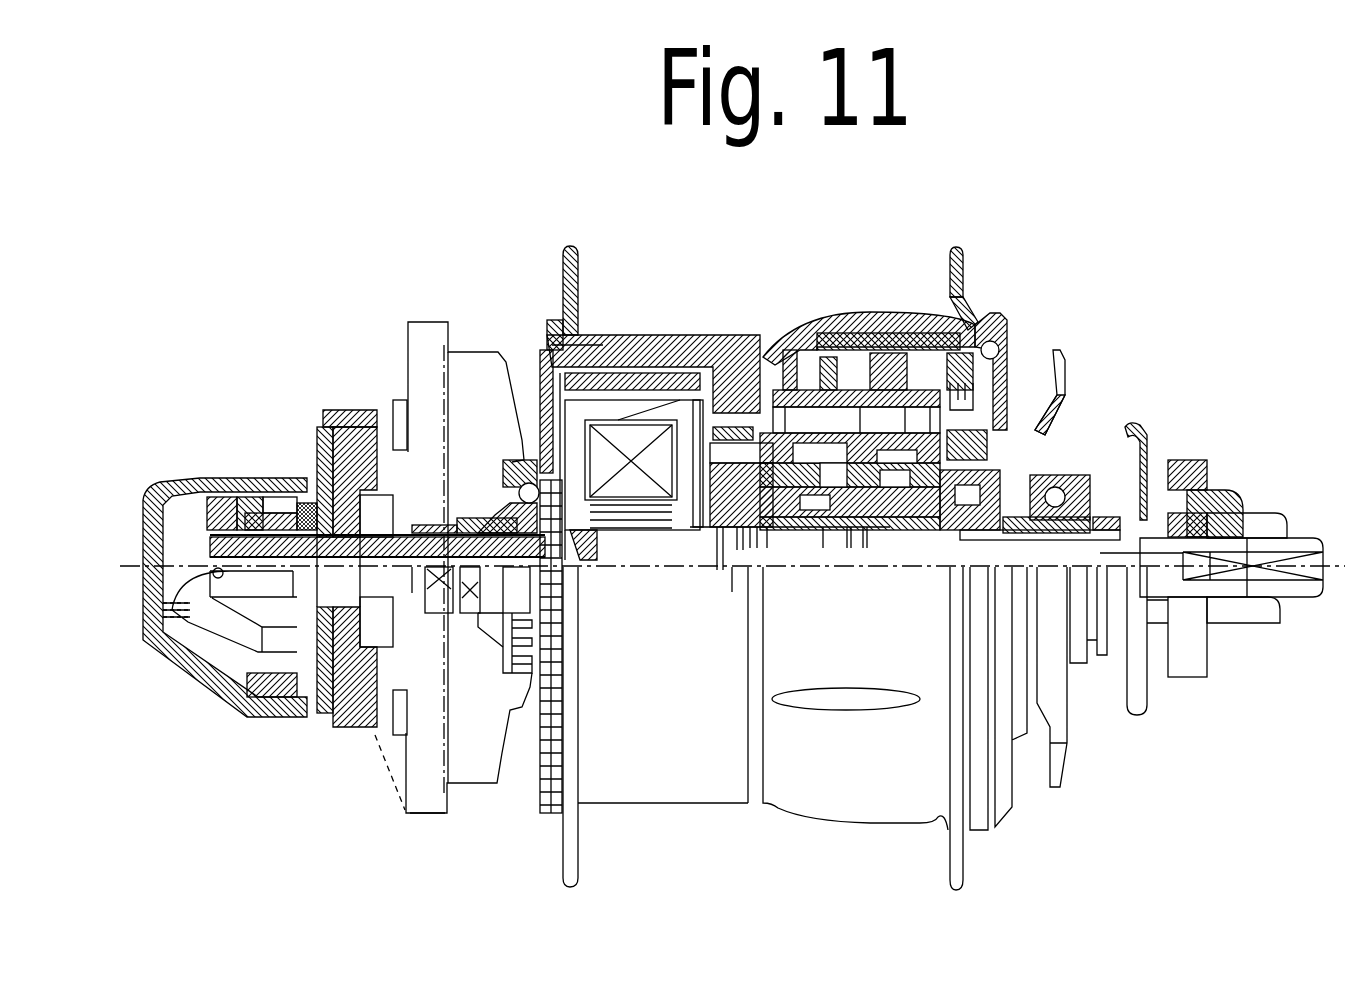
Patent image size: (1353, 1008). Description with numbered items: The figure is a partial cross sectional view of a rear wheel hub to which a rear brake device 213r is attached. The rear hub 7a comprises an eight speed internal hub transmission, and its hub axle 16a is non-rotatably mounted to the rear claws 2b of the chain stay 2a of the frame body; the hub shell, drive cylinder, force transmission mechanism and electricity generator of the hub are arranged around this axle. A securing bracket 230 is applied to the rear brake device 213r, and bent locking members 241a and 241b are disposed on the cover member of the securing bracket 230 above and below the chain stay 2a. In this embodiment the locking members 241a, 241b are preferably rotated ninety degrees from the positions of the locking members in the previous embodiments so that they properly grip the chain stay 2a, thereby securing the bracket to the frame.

The hub axle 16a is at (240, 497).
The rear claws 2b is at (322, 412).
The chain stay 2a is at (315, 725).
The bent locking member 241a is at (355, 412).
The bent locking member 241b is at (357, 733).
The securing bracket 230 is at (378, 412).
The rear brake device 213r is at (437, 832).
The rear hub 7a is at (808, 305).